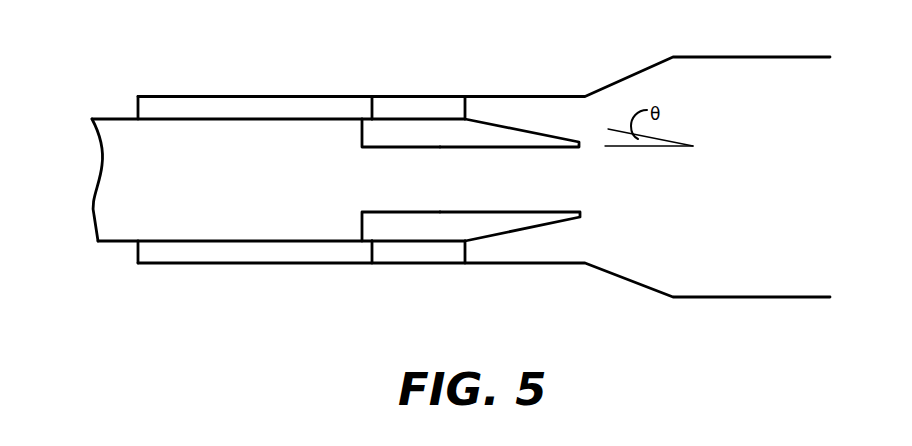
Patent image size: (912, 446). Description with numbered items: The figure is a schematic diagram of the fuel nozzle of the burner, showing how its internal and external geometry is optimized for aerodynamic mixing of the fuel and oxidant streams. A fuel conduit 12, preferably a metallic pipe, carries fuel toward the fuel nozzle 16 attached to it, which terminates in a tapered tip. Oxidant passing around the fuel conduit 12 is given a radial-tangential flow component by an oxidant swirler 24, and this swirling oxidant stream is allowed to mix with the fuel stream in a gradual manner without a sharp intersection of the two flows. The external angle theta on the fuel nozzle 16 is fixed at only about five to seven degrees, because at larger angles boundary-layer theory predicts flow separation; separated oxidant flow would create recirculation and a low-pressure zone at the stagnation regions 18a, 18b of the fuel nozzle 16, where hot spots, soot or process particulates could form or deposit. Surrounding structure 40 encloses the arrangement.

The fuel conduit 12 is at (93, 214).
The fuel nozzle 16 is at (412, 138).
The stagnation region 18a is at (581, 145).
The stagnation region 18b is at (582, 212).
The oxidant swirler 24 is at (420, 105).
The outer housing 40 is at (695, 77).